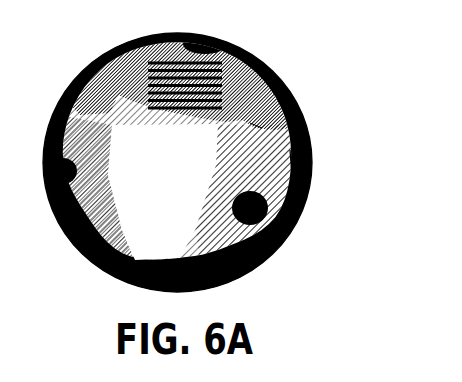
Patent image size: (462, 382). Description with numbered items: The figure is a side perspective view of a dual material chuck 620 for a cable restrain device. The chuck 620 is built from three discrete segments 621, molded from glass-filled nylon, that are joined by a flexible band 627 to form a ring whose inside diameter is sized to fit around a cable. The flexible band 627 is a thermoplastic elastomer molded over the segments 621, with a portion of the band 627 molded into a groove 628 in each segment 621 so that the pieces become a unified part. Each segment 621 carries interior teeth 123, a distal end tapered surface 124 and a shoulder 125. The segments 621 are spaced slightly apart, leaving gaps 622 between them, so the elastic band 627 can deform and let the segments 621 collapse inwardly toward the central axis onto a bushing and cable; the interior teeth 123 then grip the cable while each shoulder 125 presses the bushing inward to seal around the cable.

The chuck 620 is at (336, 92).
The segments 621 is at (242, 62).
The interior teeth 123 is at (153, 107).
The shoulder 125 is at (248, 131).
The distal end tapered surface 124 is at (332, 162).
The groove 628 is at (272, 180).
The gaps 622 is at (147, 214).
The flexible band 627 is at (202, 170).